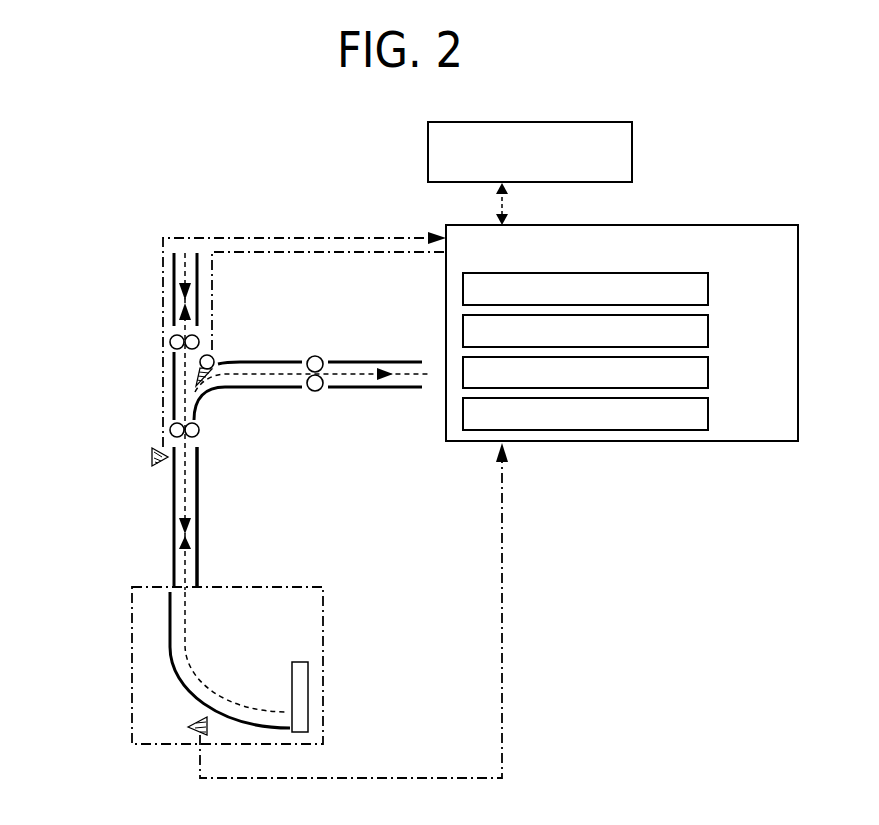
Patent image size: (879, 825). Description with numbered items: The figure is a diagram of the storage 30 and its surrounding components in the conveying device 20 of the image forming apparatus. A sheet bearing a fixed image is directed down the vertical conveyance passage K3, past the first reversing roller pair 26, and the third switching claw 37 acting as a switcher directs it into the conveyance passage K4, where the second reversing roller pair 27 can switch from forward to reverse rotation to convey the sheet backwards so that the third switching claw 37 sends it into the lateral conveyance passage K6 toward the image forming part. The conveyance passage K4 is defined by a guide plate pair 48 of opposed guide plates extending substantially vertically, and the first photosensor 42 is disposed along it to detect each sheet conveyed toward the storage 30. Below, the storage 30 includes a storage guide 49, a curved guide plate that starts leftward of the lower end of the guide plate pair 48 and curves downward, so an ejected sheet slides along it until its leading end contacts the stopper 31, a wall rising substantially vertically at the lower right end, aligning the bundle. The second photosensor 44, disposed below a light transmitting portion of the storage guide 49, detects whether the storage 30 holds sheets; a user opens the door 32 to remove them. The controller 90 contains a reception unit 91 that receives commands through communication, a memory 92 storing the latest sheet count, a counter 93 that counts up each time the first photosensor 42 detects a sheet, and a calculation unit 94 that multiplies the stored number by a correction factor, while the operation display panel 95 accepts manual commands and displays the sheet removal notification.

The conveying device 20 is at (108, 413).
The first reversing roller pair 26 is at (170, 342).
The second reversing roller pair 27 is at (199, 432).
The storage 30 is at (281, 665).
The door 32 is at (324, 624).
The stopper 31 is at (309, 693).
The third switching claw 37 is at (215, 361).
The first photosensor 42 is at (150, 458).
The second photosensor 44 is at (190, 727).
The guide plate pair 48 is at (199, 500).
The storage guide 49 is at (168, 639).
The controller 90 is at (622, 316).
The reception unit 91 is at (709, 288).
The memory 92 is at (709, 330).
The counter 93 is at (709, 372).
The calculation unit 94 is at (709, 413).
The operation display panel 95 is at (428, 159).
The vertical conveyance passage K3 is at (178, 273).
The conveyance passage K4 is at (180, 490).
The lateral conveyance passage K6 is at (350, 370).